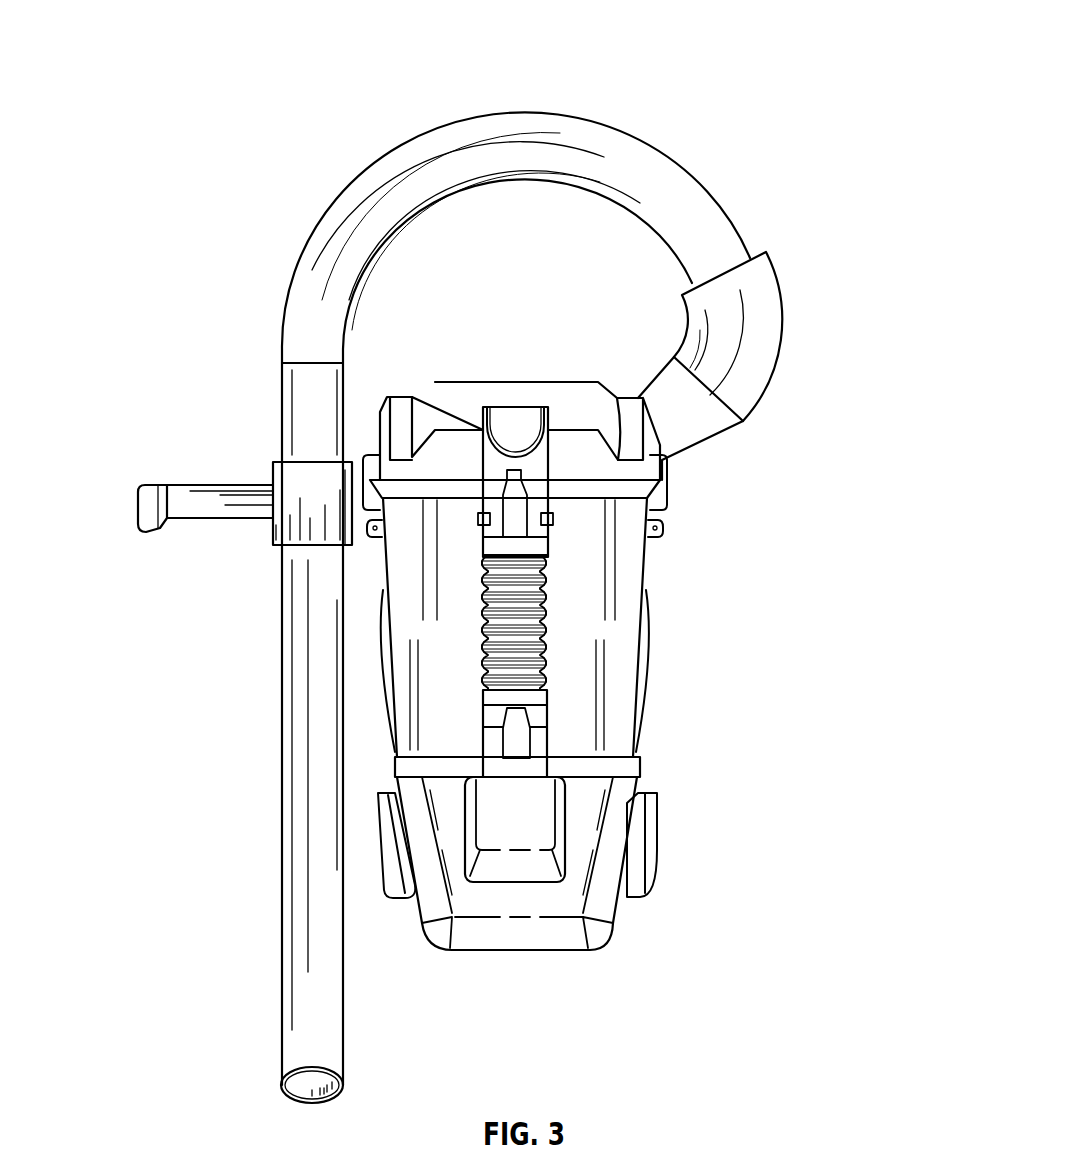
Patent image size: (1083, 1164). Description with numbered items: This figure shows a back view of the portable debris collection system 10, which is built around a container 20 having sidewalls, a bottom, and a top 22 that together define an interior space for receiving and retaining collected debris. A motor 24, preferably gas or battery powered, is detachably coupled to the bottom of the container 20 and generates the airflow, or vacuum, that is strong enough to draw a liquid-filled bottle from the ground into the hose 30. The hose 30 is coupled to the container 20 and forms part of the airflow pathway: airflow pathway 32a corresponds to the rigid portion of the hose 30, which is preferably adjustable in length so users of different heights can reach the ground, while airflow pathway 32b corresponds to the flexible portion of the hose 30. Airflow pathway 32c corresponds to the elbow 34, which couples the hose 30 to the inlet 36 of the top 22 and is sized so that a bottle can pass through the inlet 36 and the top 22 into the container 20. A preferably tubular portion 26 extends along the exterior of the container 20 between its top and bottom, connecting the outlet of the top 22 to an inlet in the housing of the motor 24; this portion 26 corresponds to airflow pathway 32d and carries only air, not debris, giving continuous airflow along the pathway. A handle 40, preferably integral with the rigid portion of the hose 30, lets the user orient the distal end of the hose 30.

The debris collection system 10 is at (817, 55).
The container 20 is at (627, 565).
The top 22 is at (463, 405).
The motor 24 is at (603, 902).
The portion 26 is at (623, 645).
The hose 30 is at (502, 607).
The airflow pathway 32a is at (303, 825).
The airflow pathway 32b is at (718, 203).
The airflow pathway 32c is at (753, 345).
The airflow pathway 32d is at (547, 652).
The elbow 34 is at (793, 336).
The inlet 36 is at (683, 408).
The handle 40 is at (138, 505).